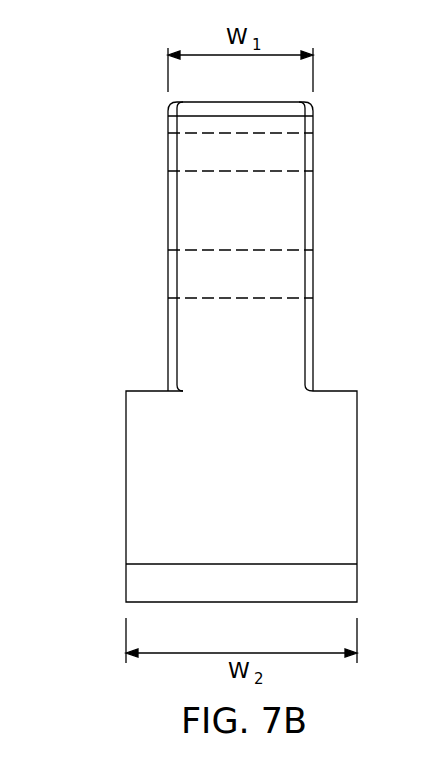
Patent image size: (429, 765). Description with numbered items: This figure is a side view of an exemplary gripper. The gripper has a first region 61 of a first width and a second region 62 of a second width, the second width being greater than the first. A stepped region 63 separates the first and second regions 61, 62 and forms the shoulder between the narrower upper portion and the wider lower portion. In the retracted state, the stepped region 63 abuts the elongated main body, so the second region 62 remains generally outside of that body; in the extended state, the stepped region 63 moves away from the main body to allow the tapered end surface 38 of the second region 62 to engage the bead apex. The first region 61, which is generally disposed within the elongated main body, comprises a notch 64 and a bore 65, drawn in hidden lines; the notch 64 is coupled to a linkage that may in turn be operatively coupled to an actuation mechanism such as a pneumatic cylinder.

The tapered end surface 38 is at (302, 587).
The first region 61 is at (168, 200).
The second region 62 is at (126, 463).
The stepped region 63 is at (332, 390).
The notch 64 is at (273, 153).
The bore 65 is at (273, 272).